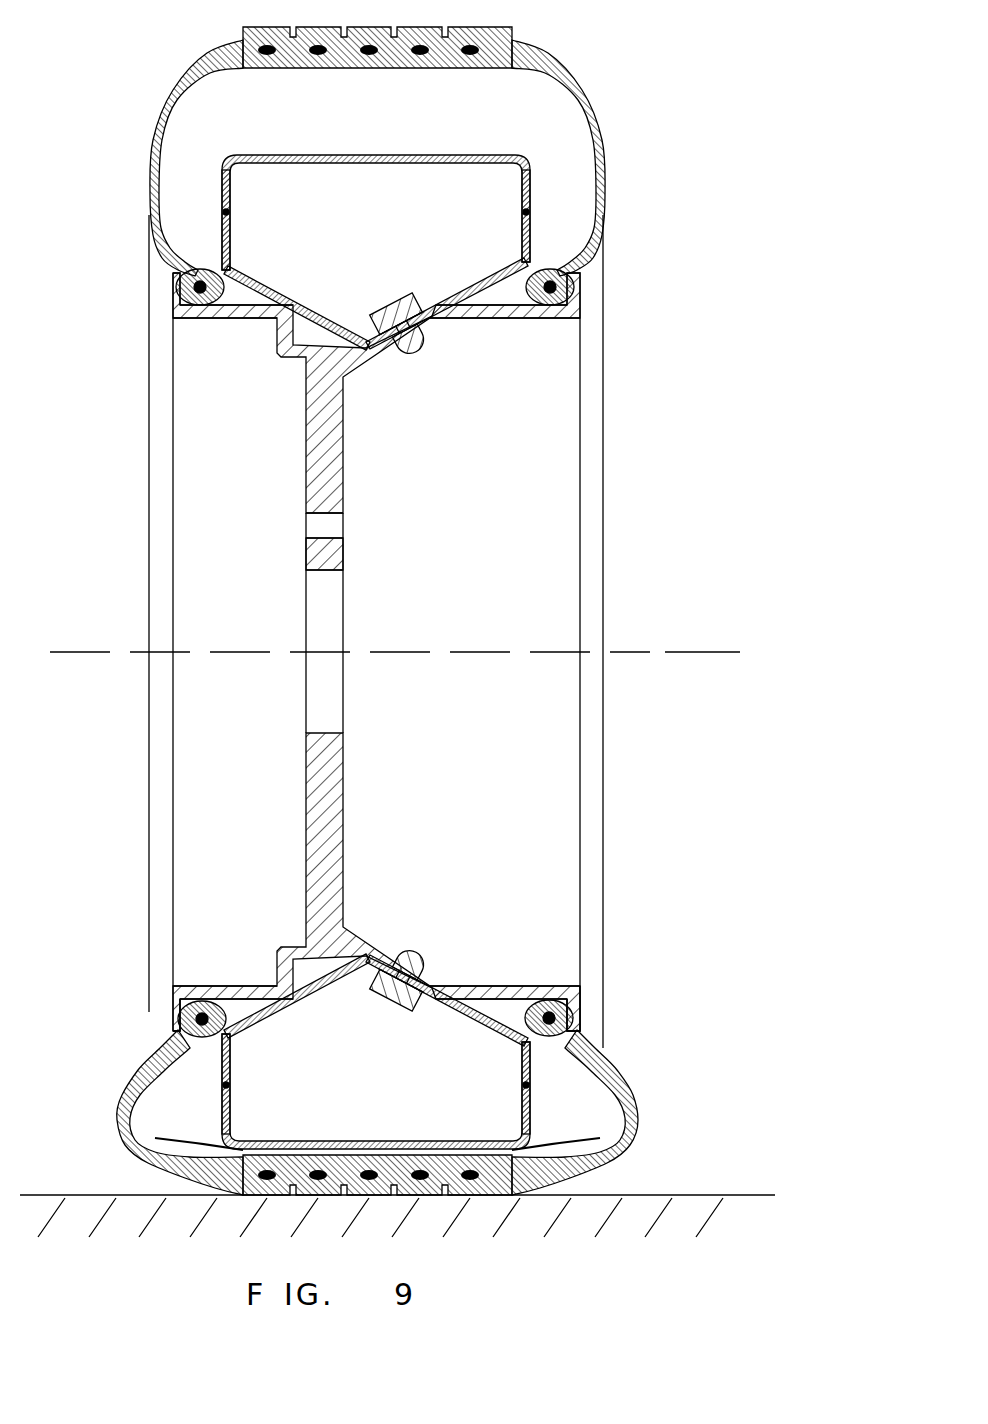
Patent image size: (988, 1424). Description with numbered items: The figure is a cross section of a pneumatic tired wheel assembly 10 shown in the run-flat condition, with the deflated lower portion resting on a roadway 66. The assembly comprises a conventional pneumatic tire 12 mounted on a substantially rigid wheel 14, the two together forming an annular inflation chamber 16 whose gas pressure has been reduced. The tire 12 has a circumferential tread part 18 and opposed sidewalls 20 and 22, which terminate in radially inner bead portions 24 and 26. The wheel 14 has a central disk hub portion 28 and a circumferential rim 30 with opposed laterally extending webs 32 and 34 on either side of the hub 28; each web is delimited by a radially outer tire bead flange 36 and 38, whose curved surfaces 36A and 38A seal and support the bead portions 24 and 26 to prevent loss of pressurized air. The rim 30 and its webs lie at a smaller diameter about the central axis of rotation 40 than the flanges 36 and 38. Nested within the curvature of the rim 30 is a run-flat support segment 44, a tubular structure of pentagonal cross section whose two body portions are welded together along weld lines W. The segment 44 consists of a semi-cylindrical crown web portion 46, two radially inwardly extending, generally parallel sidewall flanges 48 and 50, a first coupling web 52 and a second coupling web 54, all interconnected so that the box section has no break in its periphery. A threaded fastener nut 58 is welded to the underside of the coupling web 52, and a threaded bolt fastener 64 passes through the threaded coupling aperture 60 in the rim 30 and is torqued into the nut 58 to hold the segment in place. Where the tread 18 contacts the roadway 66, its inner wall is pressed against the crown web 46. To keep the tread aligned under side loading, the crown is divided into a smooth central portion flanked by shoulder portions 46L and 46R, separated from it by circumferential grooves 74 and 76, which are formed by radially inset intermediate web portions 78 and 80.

The pneumatic tired wheel assembly 10 is at (656, 68).
The pneumatic tire 12 is at (606, 150).
The wheel 14 is at (578, 858).
The inflation chamber 16 is at (436, 116).
The tread part 18 is at (497, 33).
The sidewall 20 is at (143, 1048).
The sidewall 22 is at (594, 1062).
The bead portion 24 is at (184, 284).
The bead portion 26 is at (570, 298).
The disk hub portion 28 is at (337, 467).
The rim 30 is at (360, 942).
The web 32 is at (495, 985).
The web 34 is at (240, 987).
The tire bead flange 36 is at (178, 312).
The curved surface 36A is at (207, 987).
The tire bead flange 38 is at (560, 312).
The curved surface 38A is at (562, 957).
The central axis of rotation 40 is at (648, 650).
The support segment 44 is at (156, 160).
The crown web portion 46 is at (395, 165).
The shoulder portion 46L is at (243, 157).
The shoulder portion 46R is at (505, 160).
The sidewall flange 48 is at (232, 212).
The sidewall flange 50 is at (520, 220).
The first coupling web 52 is at (470, 287).
The second coupling web 54 is at (312, 308).
The threaded fastener nut 58 is at (375, 985).
The threaded coupling aperture 60 is at (470, 1196).
The threaded bolt fastener 64 is at (411, 366).
The roadway 66 is at (687, 1195).
The circumferential groove 74 is at (278, 155).
The circumferential groove 76 is at (490, 160).
The first intermediate web portion 78 is at (276, 1146).
The second intermediate web portion 80 is at (478, 1146).
The weld line W is at (528, 220).